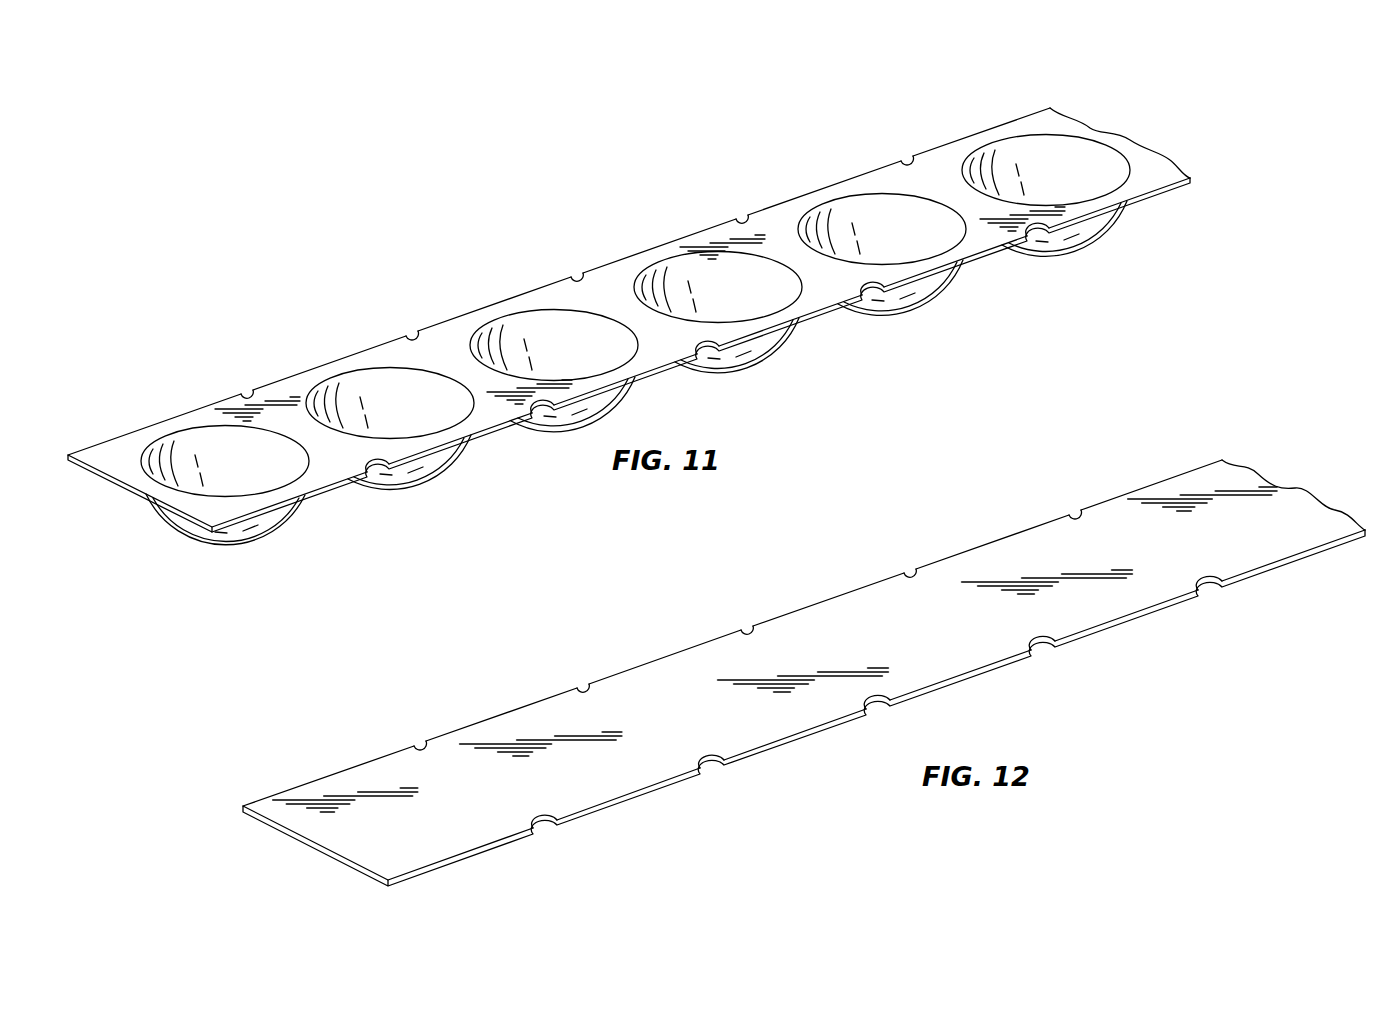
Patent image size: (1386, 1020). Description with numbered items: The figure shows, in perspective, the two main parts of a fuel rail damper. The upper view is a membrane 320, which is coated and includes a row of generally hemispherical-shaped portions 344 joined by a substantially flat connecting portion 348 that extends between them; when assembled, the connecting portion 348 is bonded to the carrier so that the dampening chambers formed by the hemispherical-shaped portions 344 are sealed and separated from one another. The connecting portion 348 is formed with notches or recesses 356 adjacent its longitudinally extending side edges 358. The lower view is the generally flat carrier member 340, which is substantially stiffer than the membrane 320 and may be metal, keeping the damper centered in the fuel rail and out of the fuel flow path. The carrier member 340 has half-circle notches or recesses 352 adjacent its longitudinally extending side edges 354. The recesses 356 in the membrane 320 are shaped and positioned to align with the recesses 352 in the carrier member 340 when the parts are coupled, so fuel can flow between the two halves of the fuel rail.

In FIG. 11, the membrane 320 is at (950, 117).
In FIG. 11, the connecting portion 348 is at (602, 280).
In FIG. 11, the side edges 358 is at (1015, 112).
In FIG. 11, the recesses 356 is at (412, 337).
In FIG. 11, the hemispherical-shaped portions 344 is at (375, 465).
In FIG. 12, the carrier member 340 is at (1203, 483).
In FIG. 12, the side edges 354 is at (912, 568).
In FIG. 12, the recesses 352 is at (1073, 512).